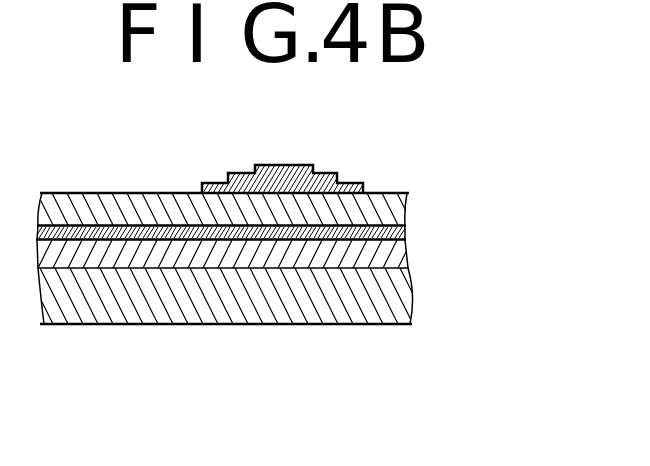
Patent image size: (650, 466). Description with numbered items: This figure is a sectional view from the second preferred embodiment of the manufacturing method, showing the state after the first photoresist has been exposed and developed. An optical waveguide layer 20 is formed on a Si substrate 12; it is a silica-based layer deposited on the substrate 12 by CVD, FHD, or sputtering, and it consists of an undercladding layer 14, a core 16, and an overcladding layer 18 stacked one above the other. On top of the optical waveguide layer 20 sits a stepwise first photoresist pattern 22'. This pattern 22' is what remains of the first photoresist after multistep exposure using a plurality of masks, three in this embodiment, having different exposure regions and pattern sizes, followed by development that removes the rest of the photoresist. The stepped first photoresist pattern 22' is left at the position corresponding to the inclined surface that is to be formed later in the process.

The Si substrate 12 is at (410, 295).
The undercladding layer 14 is at (405, 259).
The core 16 is at (402, 233).
The overcladding layer 18 is at (404, 202).
The optical waveguide layer 20 is at (288, 229).
The first photoresist pattern 22' is at (281, 154).